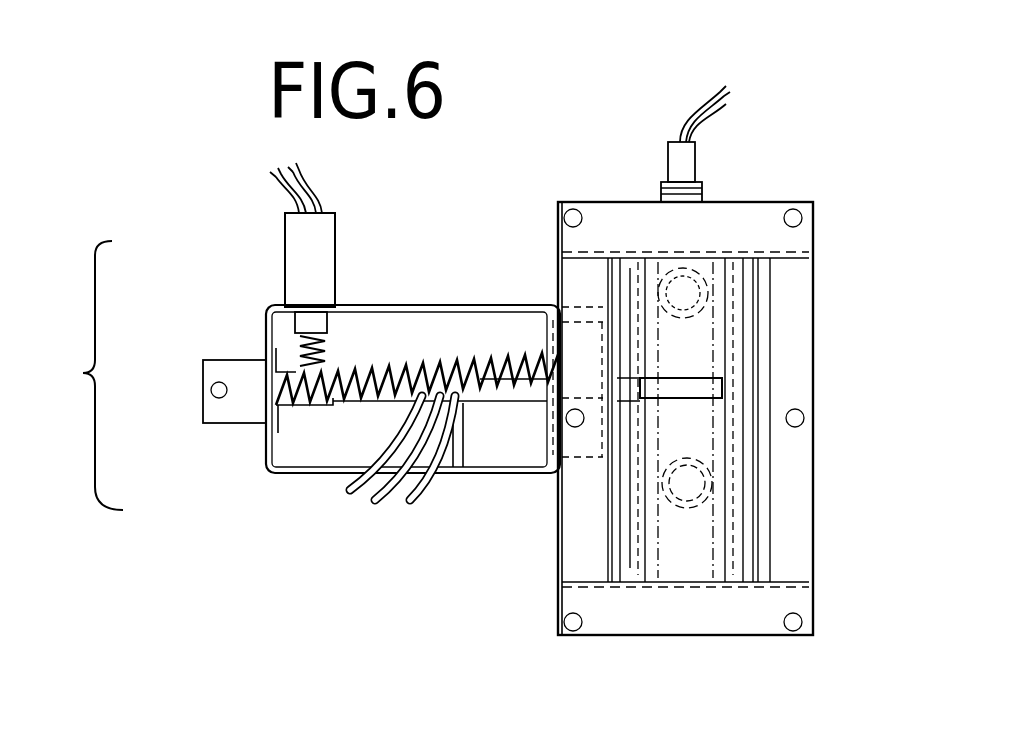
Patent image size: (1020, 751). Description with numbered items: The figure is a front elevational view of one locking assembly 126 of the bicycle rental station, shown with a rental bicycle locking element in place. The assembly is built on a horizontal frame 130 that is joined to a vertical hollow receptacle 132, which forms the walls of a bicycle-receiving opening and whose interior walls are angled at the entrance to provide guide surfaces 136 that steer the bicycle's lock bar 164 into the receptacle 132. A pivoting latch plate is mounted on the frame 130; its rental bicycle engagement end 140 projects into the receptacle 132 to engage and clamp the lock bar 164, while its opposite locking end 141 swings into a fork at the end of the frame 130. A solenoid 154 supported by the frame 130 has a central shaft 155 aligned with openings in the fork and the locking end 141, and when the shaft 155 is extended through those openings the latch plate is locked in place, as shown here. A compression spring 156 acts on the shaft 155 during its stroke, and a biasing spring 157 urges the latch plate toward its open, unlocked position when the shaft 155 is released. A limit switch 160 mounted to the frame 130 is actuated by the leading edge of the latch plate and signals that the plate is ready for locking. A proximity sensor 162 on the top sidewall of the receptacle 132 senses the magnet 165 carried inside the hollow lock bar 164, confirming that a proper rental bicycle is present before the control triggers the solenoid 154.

The locking assembly 126 is at (84, 375).
The frame 130 is at (445, 300).
The receptacle 132 is at (737, 647).
The guide surfaces 136 is at (740, 372).
The rental bicycle engagement end 140 is at (700, 392).
The locking end 141 is at (320, 414).
The solenoid 154 is at (290, 245).
The central shaft 155 is at (322, 345).
The compression spring 156 is at (292, 342).
The biasing spring 157 is at (495, 388).
The limit switch 160 is at (455, 412).
The proximity sensor 162 is at (688, 166).
The lock bar 164 is at (705, 300).
The magnet 165 is at (700, 290).